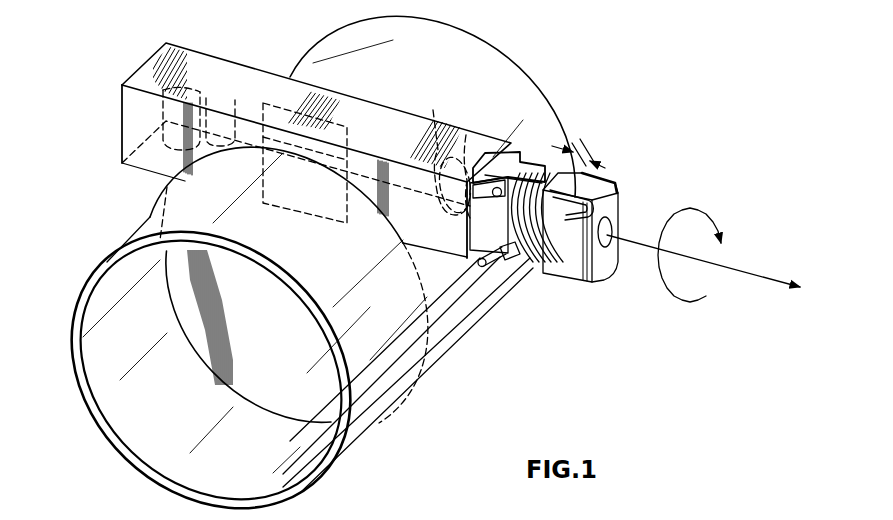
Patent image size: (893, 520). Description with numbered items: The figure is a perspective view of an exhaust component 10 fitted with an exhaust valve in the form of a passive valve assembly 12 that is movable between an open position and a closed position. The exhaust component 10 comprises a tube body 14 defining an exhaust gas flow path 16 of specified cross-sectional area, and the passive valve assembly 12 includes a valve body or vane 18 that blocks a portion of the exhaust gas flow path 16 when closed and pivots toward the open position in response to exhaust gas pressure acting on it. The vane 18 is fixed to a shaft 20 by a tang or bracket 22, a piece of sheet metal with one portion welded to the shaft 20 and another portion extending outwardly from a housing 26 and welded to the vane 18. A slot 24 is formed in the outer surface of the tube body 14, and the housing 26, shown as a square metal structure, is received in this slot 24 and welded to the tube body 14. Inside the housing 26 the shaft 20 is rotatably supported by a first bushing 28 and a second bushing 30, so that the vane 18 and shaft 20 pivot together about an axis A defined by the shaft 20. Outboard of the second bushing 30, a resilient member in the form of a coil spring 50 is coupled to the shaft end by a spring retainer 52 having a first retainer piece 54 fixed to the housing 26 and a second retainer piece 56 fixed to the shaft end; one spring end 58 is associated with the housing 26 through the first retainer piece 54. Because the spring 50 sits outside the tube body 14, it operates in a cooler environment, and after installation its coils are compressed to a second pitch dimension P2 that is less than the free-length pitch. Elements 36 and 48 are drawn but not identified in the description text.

The exhaust component 10 is at (95, 62).
The passive valve assembly 12 is at (520, 302).
The tube body 14 is at (350, 428).
The exhaust gas flow path 16 is at (175, 440).
The vane 18 is at (267, 346).
The shaft 20 is at (247, 118).
The bracket 22 is at (332, 117).
The slot 24 is at (290, 210).
The housing 26 is at (135, 118).
The first bushing 28 is at (193, 55).
The second bushing 30 is at (466, 135).
The rod 36 is at (217, 90).
The pin 48 is at (433, 110).
The spring 50 is at (532, 262).
The spring retainer 52 is at (642, 188).
The first retainer piece 54 is at (502, 234).
The second retainer piece 56 is at (576, 267).
The first spring end 58 is at (483, 270).
The second pitch dimension P2 is at (598, 155).
The axis A is at (763, 272).